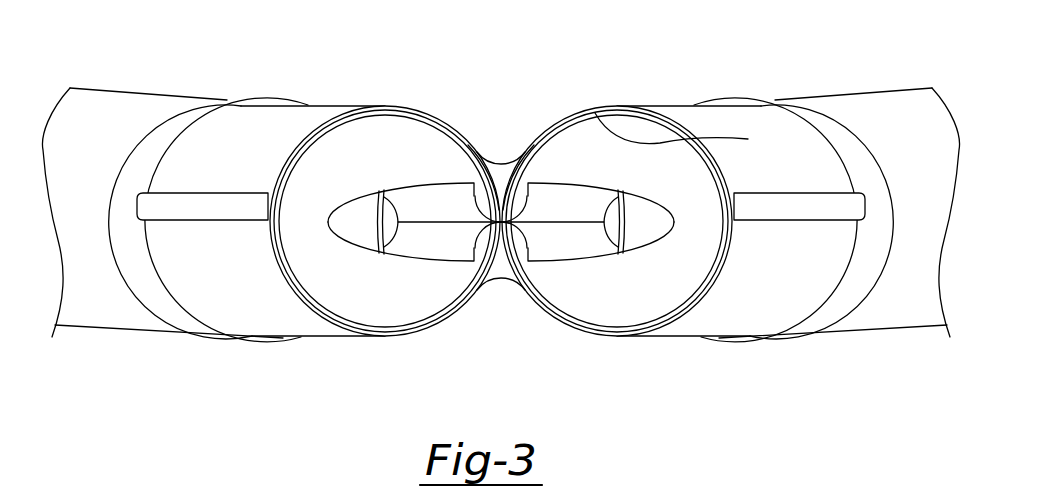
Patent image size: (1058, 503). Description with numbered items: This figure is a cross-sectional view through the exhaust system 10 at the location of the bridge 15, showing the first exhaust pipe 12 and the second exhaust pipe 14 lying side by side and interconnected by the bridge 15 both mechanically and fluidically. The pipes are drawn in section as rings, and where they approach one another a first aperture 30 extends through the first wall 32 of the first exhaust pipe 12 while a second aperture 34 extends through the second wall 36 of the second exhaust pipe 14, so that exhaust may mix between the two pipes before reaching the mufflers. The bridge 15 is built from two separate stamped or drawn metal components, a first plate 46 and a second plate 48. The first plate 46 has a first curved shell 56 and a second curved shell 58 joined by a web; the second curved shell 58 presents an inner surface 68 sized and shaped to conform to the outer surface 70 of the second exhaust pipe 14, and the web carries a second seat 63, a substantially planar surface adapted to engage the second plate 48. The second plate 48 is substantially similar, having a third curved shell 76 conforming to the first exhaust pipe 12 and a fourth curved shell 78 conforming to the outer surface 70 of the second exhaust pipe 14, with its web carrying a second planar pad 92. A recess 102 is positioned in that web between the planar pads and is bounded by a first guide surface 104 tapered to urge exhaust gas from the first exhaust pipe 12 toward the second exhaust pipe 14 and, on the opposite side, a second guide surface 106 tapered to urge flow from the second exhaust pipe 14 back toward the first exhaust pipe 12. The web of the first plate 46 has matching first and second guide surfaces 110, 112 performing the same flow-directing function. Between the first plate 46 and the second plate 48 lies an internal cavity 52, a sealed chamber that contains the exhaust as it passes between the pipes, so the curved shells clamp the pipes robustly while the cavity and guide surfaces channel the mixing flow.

The exhaust system 10 is at (500, 208).
The first exhaust pipe 12 is at (122, 315).
The second exhaust pipe 14 is at (875, 322).
The bridge 15 is at (382, 98).
The first aperture 30 is at (410, 190).
The first wall 32 is at (480, 170).
The second aperture 34 is at (602, 195).
The second wall 36 is at (524, 170).
The first plate 46 is at (640, 100).
The second plate 48 is at (666, 340).
The internal cavity 52 is at (522, 250).
The first curved shell 56 is at (320, 105).
The second curved shell 58 is at (668, 105).
The second seat 63 is at (409, 225).
The inner surface 68 is at (685, 133).
The outer surface 70 is at (504, 163).
The third curved shell 76 is at (272, 315).
The fourth curved shell 78 is at (730, 315).
The second planar pad 92 is at (434, 218).
The recess 102 is at (508, 273).
The first guide surface 104 is at (527, 239).
The second guide surface 106 is at (477, 239).
The first guide surface 110 is at (527, 202).
The second guide surface 112 is at (477, 202).